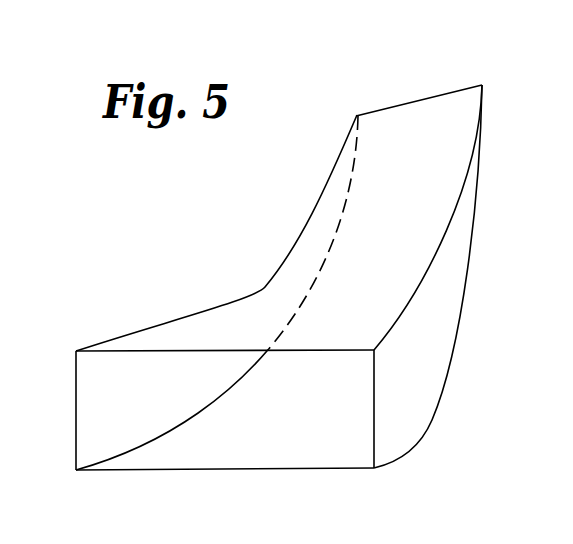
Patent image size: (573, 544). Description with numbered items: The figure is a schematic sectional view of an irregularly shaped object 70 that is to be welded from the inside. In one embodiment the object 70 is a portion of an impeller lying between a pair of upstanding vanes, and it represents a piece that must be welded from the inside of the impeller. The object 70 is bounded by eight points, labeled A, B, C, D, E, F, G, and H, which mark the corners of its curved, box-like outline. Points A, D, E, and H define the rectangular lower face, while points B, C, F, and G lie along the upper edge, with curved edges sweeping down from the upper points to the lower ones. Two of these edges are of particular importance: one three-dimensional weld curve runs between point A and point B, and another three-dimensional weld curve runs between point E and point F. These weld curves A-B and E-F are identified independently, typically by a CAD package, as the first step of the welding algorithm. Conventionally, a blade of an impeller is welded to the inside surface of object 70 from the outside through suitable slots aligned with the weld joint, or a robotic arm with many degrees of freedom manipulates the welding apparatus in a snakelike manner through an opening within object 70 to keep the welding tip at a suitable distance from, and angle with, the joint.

The irregularly shaped object 70 is at (226, 234).
The point A is at (76, 351).
The point B is at (356, 116).
The point C is at (357, 116).
The point D is at (76, 470).
The point E is at (374, 350).
The point F is at (482, 85).
The point G is at (482, 85).
The point H is at (374, 468).